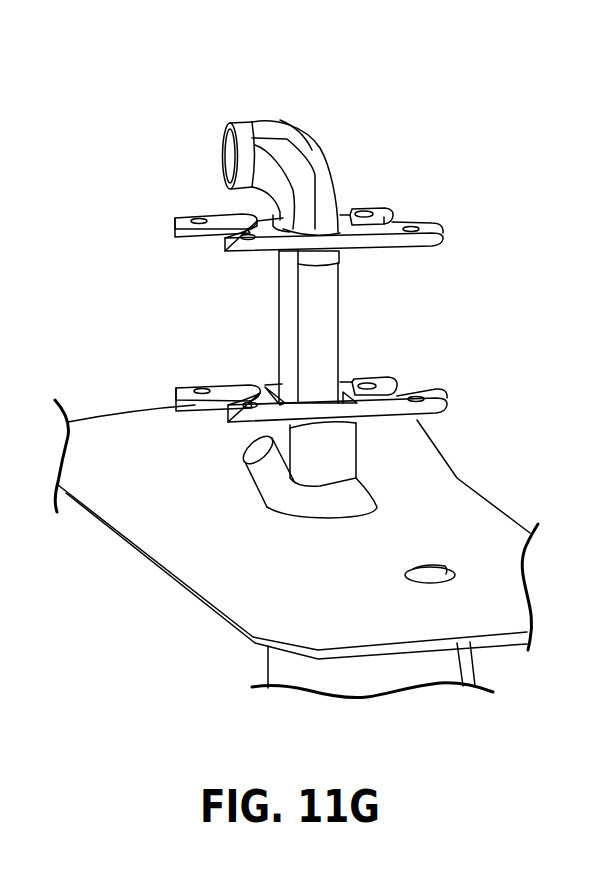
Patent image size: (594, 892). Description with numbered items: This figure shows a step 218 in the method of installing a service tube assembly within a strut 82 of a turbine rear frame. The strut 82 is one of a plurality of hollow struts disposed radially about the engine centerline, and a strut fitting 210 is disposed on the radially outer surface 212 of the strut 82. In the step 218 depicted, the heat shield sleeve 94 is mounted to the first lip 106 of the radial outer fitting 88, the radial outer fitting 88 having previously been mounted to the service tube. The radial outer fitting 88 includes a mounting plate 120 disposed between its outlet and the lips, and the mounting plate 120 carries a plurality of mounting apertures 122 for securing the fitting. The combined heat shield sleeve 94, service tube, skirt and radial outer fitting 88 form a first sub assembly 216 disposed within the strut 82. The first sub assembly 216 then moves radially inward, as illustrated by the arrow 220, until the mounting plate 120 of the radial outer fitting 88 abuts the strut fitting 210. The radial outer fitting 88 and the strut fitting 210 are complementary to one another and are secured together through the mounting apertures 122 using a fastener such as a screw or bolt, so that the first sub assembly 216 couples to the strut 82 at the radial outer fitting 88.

The strut 82 is at (363, 670).
The radial outer fitting 88 is at (343, 189).
The heat shield sleeve 94 is at (339, 312).
The first lip 106 is at (345, 258).
The mounting plate 120 is at (352, 210).
The mounting apertures 122 is at (195, 217).
The strut fitting 210 is at (380, 397).
The radially outer surface 212 is at (137, 456).
The first sub assembly 216 is at (213, 196).
The step 218 is at (190, 99).
The arrow 220 is at (253, 365).